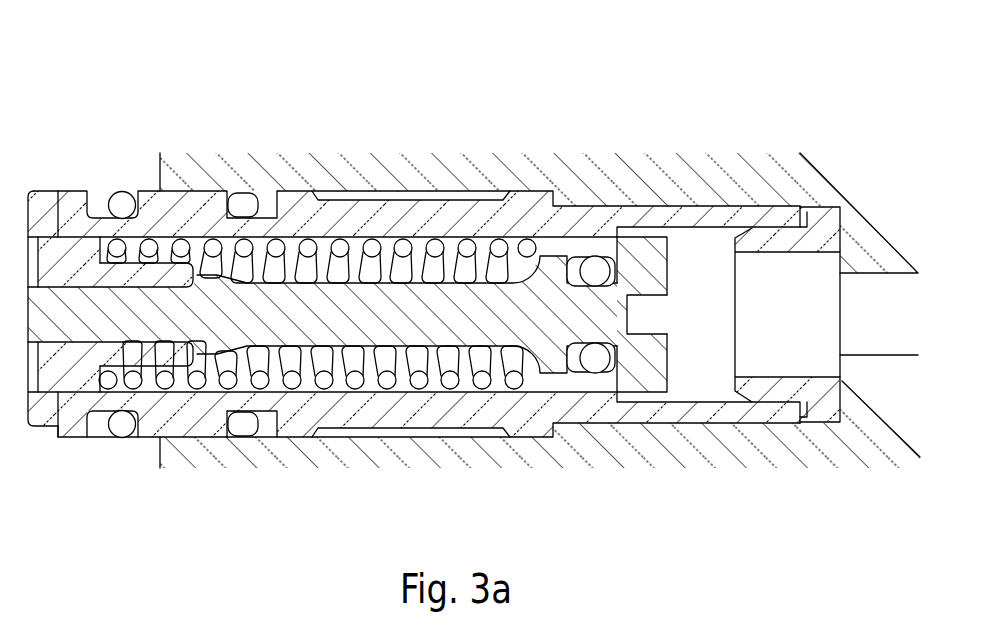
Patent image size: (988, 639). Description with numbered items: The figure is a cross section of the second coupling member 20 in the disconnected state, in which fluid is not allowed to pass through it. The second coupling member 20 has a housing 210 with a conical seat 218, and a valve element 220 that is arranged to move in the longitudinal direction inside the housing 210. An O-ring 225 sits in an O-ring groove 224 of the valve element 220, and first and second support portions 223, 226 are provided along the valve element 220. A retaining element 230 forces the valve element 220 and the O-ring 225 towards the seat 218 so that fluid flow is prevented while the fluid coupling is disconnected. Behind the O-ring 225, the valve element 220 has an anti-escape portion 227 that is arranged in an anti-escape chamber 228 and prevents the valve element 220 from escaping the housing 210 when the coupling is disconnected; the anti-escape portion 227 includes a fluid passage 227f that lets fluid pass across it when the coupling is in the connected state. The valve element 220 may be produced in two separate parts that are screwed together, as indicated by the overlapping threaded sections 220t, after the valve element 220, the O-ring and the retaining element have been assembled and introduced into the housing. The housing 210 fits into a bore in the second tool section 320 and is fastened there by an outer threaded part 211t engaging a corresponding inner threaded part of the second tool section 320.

The second coupling member 20 is at (437, 291).
The housing 210 is at (438, 217).
The outer threaded part 211t is at (772, 420).
The conical seat 218 is at (653, 310).
The valve element 220 is at (415, 315).
The overlapping threaded sections 220t is at (117, 248).
The first support portion 223 is at (78, 258).
The O-ring groove 224 is at (573, 260).
The O-ring 225 is at (594, 264).
The second support portion 226 is at (553, 310).
The anti-escape portion 227 is at (664, 288).
The fluid passage 227f is at (770, 324).
The anti-escape chamber 228 is at (693, 387).
The retaining element 230 is at (308, 248).
The second tool section 320 is at (918, 180).